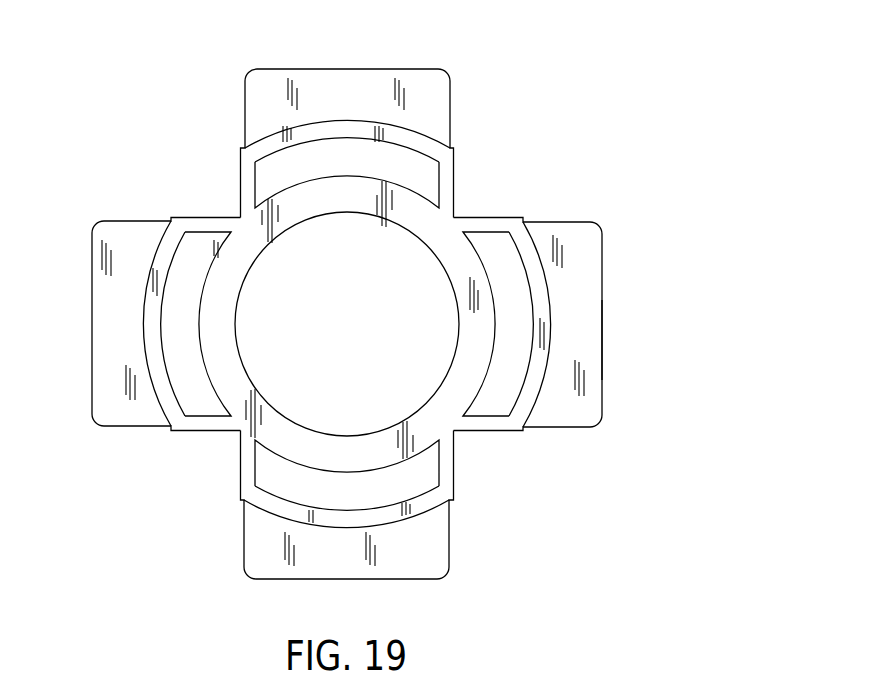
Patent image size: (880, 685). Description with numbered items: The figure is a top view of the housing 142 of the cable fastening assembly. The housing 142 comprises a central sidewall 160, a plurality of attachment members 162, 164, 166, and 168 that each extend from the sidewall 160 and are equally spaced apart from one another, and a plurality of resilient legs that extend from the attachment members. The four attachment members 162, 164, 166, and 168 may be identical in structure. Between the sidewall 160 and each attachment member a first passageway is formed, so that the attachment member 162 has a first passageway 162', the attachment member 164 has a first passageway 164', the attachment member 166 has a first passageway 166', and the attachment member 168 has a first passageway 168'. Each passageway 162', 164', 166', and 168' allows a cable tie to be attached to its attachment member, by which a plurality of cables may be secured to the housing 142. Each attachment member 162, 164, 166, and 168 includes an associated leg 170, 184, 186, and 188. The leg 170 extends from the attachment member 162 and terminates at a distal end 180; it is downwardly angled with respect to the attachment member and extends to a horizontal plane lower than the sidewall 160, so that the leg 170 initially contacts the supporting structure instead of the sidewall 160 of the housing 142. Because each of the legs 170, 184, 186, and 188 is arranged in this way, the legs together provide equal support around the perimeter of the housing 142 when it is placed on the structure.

The housing 142 is at (609, 127).
The sidewall 160 is at (440, 388).
The attachment member 162 is at (602, 306).
The passageway 162' is at (528, 296).
The attachment member 164 is at (378, 530).
The first passageway 164' is at (395, 488).
The attachment member 166 is at (131, 277).
The first passageway 166' is at (210, 272).
The attachment member 168 is at (408, 122).
The first passageway 168' is at (400, 172).
The resilient leg 170 is at (603, 341).
The distal end 180 is at (603, 268).
The leg 184 is at (400, 575).
The leg 186 is at (95, 280).
The leg 188 is at (347, 72).